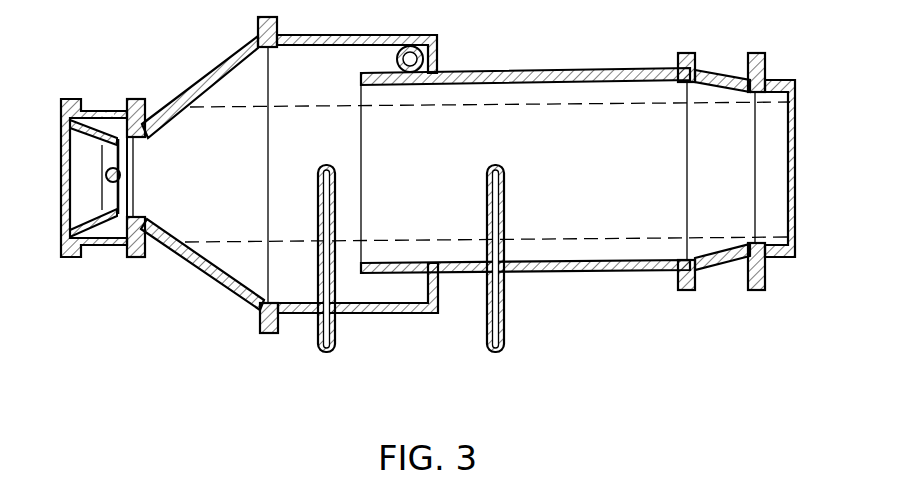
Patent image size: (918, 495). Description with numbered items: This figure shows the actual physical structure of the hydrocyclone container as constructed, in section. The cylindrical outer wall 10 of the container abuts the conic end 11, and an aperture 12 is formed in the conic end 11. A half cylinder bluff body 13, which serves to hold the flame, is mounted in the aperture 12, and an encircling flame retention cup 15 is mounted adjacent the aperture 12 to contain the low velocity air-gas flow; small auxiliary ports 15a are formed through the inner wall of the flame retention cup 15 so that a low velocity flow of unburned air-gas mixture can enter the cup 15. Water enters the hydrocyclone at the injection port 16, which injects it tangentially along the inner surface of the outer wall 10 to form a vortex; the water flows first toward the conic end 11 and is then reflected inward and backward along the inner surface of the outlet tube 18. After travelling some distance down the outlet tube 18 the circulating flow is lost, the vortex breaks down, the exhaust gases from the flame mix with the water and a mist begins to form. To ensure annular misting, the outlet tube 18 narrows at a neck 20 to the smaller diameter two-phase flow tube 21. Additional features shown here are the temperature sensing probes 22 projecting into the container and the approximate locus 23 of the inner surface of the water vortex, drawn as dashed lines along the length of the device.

The cylindrical outer wall 10 is at (590, 70).
The conic end 11 is at (245, 72).
The aperture 12 is at (136, 148).
The half cylinder bluff body 13 is at (121, 176).
The flame retention cup 15 is at (100, 247).
The auxiliary ports 15a is at (85, 222).
The injection inlet or port 16 is at (430, 56).
The outlet tube 18 is at (380, 262).
The neck 20 is at (710, 85).
The two-phase flow tube 21 is at (772, 74).
The temperature sensing probes 22 is at (336, 338).
The approximate locus of the inner surface of the water vortex 23 is at (243, 108).